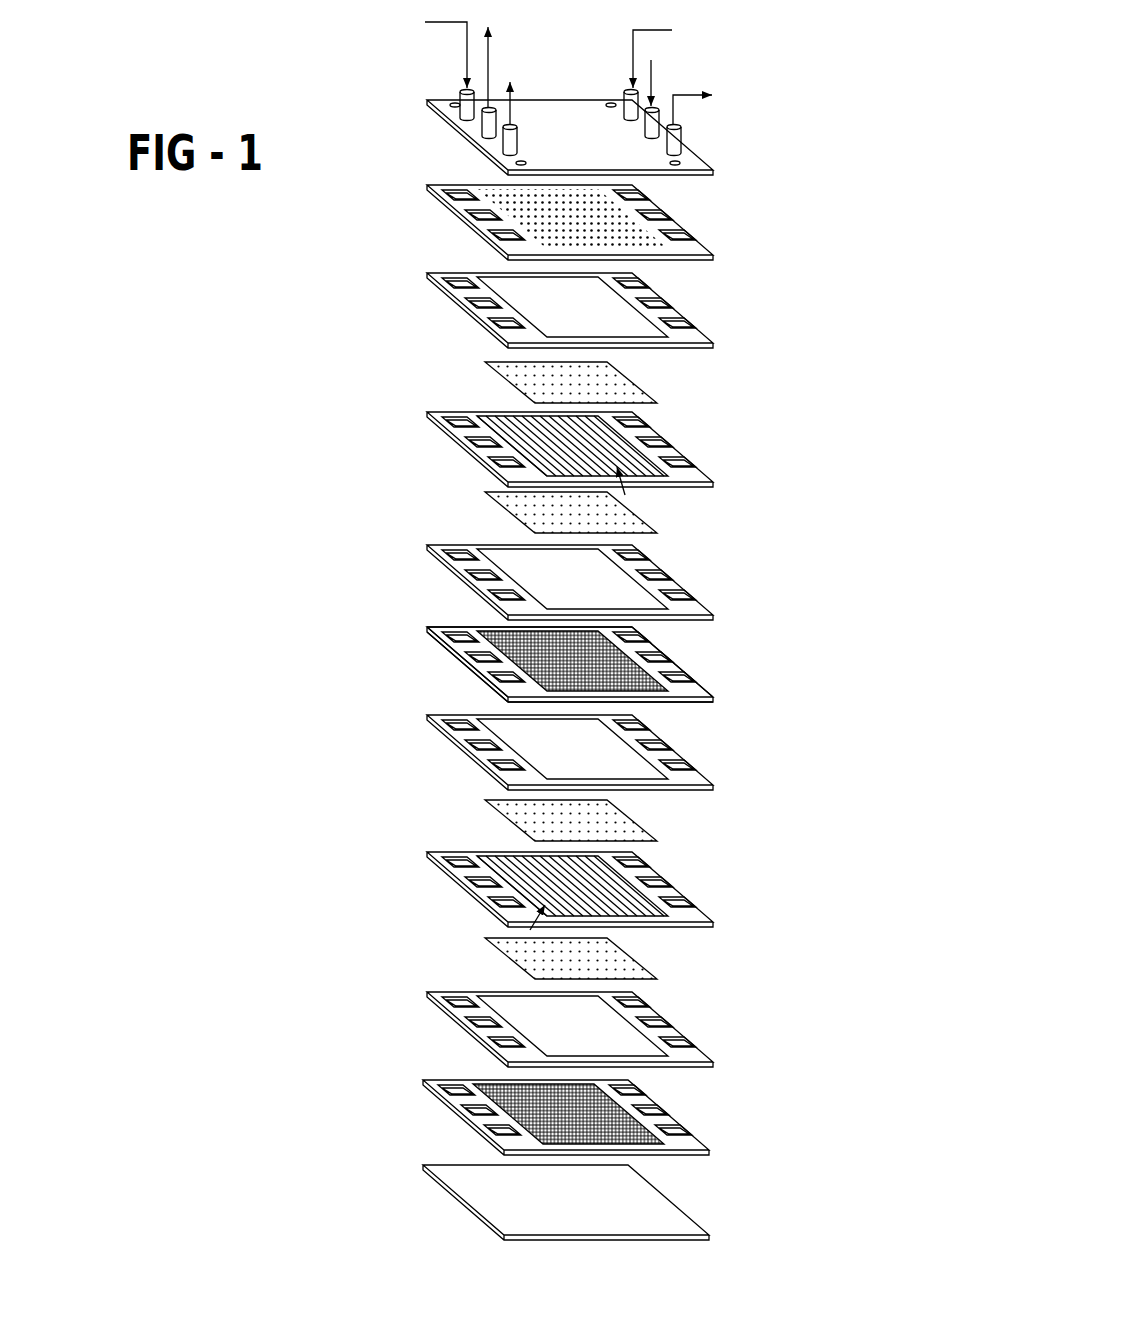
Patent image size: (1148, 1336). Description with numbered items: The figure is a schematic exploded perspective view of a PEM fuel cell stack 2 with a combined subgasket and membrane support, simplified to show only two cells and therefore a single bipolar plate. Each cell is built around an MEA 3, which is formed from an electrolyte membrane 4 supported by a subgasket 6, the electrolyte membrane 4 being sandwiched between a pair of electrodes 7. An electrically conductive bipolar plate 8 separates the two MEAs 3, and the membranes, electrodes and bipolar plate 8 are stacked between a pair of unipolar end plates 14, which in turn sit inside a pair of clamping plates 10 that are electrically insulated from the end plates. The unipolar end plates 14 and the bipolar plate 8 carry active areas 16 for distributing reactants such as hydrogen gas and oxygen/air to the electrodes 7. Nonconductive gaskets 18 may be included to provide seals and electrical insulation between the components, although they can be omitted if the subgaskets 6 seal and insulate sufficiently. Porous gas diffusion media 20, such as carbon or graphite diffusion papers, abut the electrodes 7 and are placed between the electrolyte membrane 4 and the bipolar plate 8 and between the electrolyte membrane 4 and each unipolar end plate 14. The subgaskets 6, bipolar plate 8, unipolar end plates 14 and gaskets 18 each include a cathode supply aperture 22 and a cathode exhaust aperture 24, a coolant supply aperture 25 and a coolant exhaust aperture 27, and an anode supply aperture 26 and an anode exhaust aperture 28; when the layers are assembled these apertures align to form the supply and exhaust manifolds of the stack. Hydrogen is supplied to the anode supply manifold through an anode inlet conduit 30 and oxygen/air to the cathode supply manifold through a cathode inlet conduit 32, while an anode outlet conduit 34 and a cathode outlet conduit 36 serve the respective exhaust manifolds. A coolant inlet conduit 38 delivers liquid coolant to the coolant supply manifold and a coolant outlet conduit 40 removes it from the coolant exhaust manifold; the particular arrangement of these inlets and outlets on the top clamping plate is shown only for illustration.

The PEM fuel cell stack 2 is at (820, 395).
The MEA 3 is at (580, 687).
The electrolyte membrane 4 is at (530, 430).
The subgasket 6 is at (645, 452).
The electrode 7 is at (613, 453).
The bipolar plate 8 is at (578, 648).
The clamping plate 10 is at (460, 134).
The unipolar end plate 14 is at (460, 215).
The active area 16 is at (660, 258).
The nonconductive gasket 18 is at (467, 287).
The porous gas diffusion media 20 is at (513, 382).
The cathode supply aperture 22 is at (455, 640).
The cathode exhaust aperture 24 is at (690, 685).
The coolant supply aperture 25 is at (667, 660).
The anode supply aperture 26 is at (610, 650).
The coolant exhaust aperture 27 is at (477, 658).
The anode exhaust aperture 28 is at (505, 693).
The anode inlet conduit 30 is at (626, 100).
The cathode inlet conduit 32 is at (460, 97).
The anode outlet conduit 34 is at (505, 140).
The cathode outlet conduit 36 is at (680, 140).
The coolant inlet conduit 38 is at (658, 115).
The coolant outlet conduit 40 is at (483, 125).